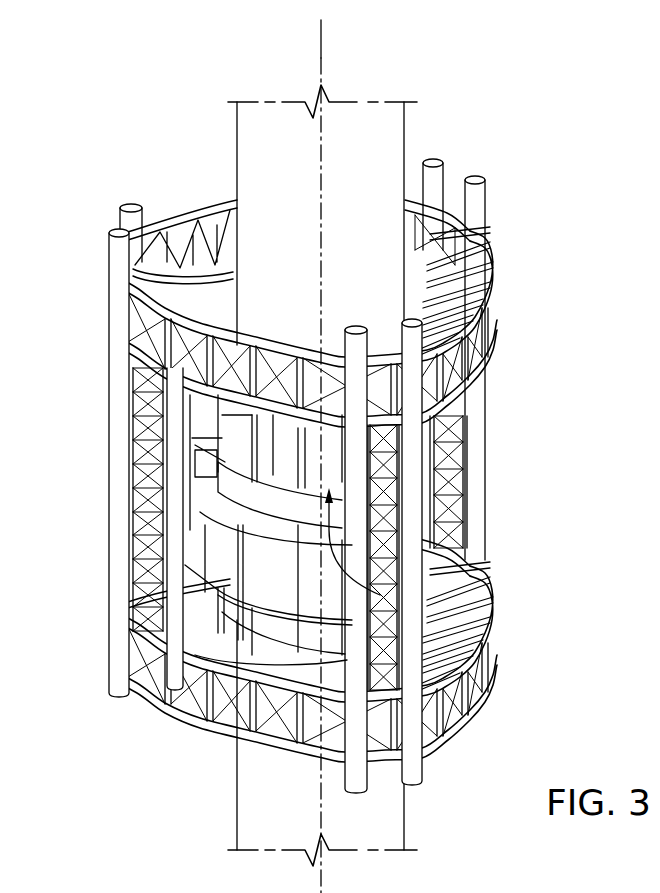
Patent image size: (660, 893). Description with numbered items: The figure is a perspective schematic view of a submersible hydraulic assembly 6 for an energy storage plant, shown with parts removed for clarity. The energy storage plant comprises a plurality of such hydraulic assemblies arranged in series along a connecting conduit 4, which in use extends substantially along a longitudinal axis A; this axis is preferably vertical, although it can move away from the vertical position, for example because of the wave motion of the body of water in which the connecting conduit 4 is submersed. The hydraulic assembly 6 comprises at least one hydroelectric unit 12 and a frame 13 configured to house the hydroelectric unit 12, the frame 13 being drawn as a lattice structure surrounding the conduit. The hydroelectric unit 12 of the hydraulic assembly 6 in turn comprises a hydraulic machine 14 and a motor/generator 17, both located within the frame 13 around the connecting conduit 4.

The connecting conduit 4 is at (392, 133).
The hydraulic assembly 6 is at (568, 147).
The hydroelectric unit 12 is at (178, 476).
The frame 13 is at (492, 252).
The hydraulic machine 14 is at (380, 595).
The motor/generator 17 is at (273, 527).
The longitudinal axis A is at (322, 53).